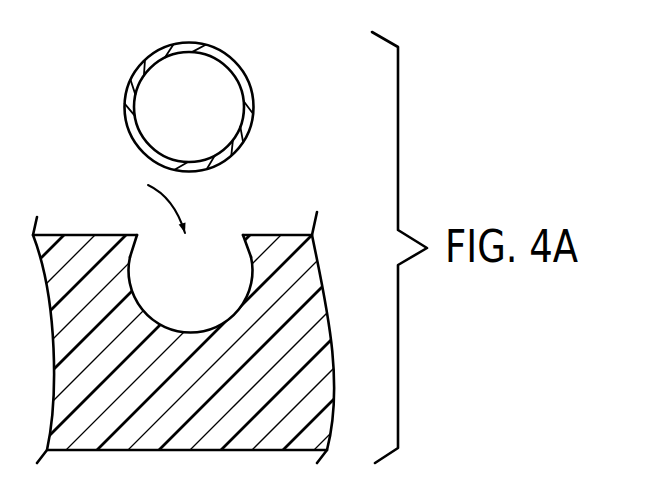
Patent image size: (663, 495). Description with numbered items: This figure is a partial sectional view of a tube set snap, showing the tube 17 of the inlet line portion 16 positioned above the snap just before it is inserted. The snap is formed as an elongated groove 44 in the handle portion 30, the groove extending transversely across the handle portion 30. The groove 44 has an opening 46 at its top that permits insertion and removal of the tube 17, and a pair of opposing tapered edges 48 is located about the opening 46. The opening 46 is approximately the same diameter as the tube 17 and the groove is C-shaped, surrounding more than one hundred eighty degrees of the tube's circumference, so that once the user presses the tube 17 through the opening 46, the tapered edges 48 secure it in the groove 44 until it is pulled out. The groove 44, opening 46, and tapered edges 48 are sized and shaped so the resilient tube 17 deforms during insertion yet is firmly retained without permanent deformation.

The inlet line portion 16 is at (245, 62).
The tube 17 is at (248, 147).
The handle portion 30 is at (300, 230).
The groove 44 is at (252, 295).
The opening 46 is at (151, 200).
The tapered edges 48 is at (131, 257).